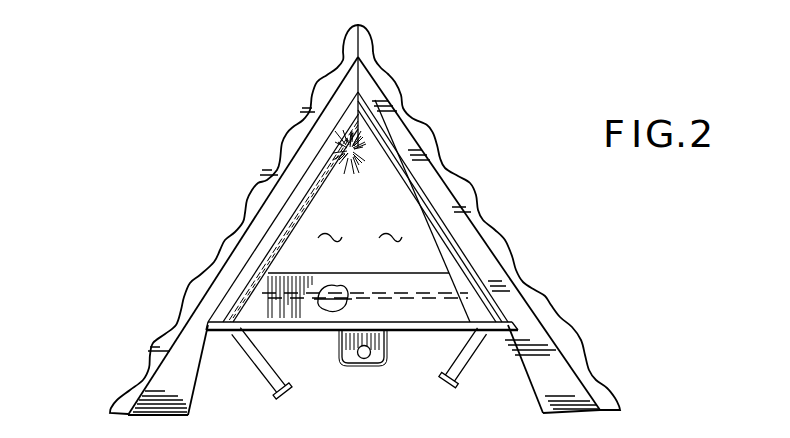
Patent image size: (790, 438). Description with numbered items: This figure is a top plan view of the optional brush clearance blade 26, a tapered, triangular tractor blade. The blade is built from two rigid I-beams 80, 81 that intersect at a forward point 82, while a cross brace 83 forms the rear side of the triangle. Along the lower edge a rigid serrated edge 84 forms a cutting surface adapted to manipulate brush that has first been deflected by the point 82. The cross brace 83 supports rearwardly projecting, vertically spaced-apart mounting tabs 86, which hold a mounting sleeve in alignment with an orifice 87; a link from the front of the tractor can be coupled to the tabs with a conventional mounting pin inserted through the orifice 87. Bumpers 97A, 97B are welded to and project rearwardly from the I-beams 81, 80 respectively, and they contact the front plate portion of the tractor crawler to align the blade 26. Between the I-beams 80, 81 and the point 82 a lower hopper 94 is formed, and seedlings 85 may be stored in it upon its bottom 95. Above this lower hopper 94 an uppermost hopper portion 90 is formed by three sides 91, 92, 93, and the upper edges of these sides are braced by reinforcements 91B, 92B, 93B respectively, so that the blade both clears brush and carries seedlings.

The brush clearance blade 26 is at (168, 271).
The I-beam 80 is at (478, 248).
The I-beam 81 is at (197, 363).
The point 82 is at (359, 52).
The cross brace 83 is at (333, 288).
The lower serrated edge 84 is at (293, 130).
The seedlings 85 is at (347, 167).
The mounting tab 86 is at (340, 343).
The orifice 87 is at (363, 359).
The uppermost hopper portion 90 is at (421, 217).
The side 91 is at (402, 310).
The reinforcement 91B is at (442, 331).
The side 92 is at (281, 238).
The reinforcement 92B is at (260, 240).
The side 93 is at (407, 178).
The reinforcement 93B is at (493, 273).
The lower hopper 94 is at (383, 217).
The bottom 95 is at (360, 238).
The bumper 97A is at (257, 381).
The bumper 97B is at (458, 388).